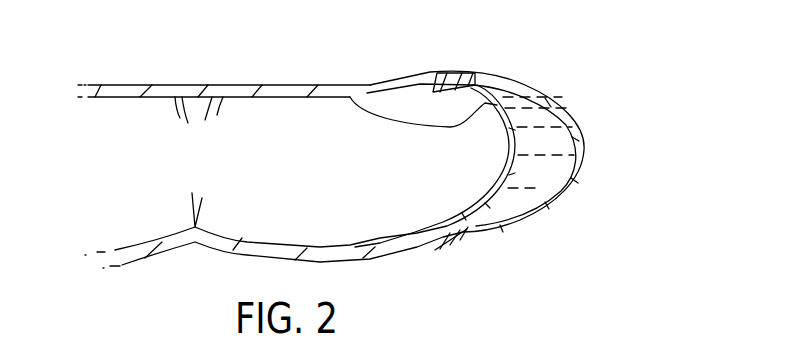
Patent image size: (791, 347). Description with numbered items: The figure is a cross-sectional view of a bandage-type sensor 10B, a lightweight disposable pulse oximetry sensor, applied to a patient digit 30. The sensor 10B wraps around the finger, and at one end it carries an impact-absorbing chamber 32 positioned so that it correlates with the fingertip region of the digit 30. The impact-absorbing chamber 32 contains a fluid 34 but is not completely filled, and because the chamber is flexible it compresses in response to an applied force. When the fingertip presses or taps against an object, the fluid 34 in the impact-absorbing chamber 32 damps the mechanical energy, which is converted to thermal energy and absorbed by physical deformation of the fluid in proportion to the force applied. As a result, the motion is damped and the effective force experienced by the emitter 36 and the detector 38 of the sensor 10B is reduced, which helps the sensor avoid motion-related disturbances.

The bandage-type sensor 10B is at (618, 88).
The patient digit 30 is at (137, 117).
The impact-absorbing chamber 32 is at (523, 210).
The fluid 34 is at (553, 173).
The emitter 36 is at (453, 75).
The detector 38 is at (452, 235).